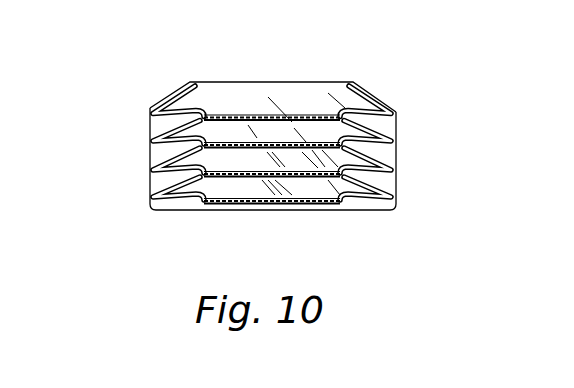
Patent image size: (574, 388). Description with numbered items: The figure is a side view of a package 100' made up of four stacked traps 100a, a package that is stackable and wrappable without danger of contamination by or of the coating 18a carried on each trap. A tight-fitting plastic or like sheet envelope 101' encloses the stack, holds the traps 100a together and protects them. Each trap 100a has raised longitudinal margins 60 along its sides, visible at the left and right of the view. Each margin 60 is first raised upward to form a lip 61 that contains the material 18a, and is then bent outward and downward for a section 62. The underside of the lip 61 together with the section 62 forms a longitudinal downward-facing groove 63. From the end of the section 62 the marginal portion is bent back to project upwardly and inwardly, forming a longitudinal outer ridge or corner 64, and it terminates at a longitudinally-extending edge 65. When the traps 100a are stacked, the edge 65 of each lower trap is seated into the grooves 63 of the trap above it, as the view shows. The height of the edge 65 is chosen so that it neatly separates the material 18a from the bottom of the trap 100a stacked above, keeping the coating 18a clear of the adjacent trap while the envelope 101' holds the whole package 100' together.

The package 100' is at (265, 186).
The trap 100a is at (165, 102).
The sheet envelope 101′ is at (317, 82).
The coating 18a is at (248, 140).
The raised longitudinal margins 60 is at (350, 216).
The lip 61 is at (336, 199).
The section 62 is at (372, 211).
The groove 63 is at (358, 203).
The outer ridge or corner 64 is at (372, 209).
The edge 65 is at (358, 172).